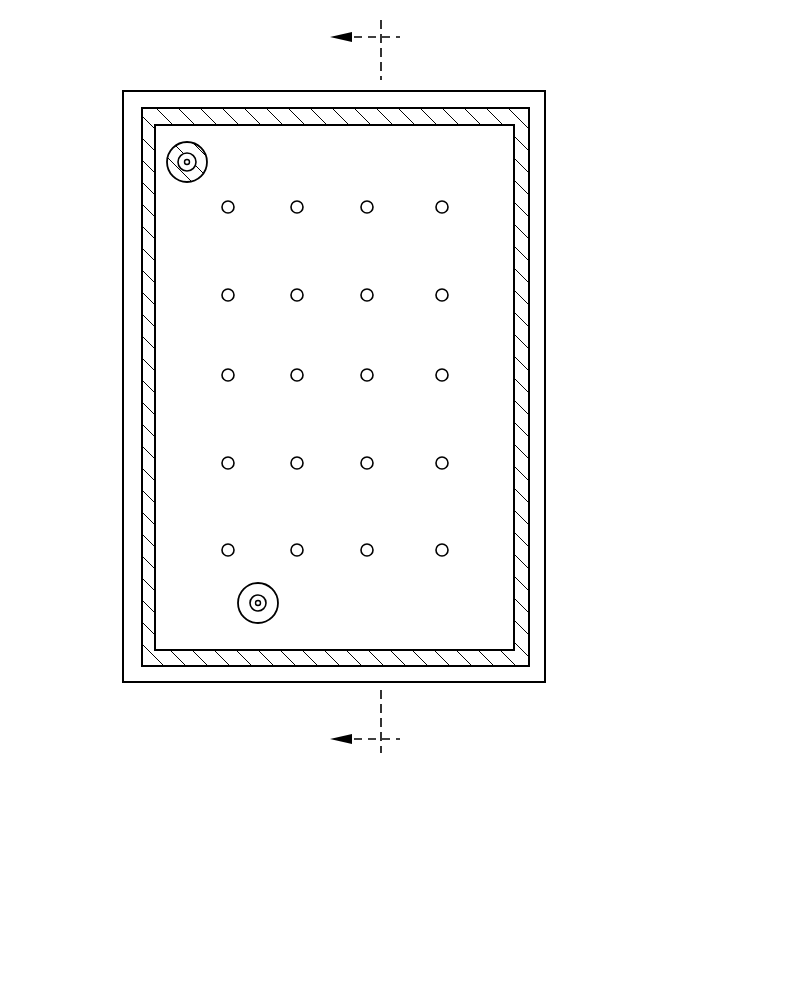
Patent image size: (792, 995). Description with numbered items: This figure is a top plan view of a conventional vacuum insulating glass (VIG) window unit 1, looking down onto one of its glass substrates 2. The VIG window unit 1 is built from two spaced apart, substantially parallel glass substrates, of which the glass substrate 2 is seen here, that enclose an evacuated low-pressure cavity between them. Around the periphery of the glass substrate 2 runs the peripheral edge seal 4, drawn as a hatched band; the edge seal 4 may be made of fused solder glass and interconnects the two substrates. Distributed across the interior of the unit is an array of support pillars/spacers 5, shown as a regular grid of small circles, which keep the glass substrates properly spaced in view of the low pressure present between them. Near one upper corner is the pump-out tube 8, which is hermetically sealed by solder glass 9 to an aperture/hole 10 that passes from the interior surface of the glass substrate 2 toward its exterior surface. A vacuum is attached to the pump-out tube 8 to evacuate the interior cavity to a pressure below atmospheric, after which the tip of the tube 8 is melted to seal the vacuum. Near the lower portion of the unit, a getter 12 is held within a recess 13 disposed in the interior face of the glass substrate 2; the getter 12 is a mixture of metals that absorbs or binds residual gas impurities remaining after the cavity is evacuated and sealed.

The VIG window unit 1 is at (110, 566).
The glass substrate 2 is at (331, 100).
The peripheral edge seal 4 is at (250, 117).
The support pillars/spacers 5 is at (448, 293).
The pump-out tube 8 is at (157, 202).
The solder glass 9 is at (186, 183).
The aperture/hole 10 is at (167, 170).
The getter 12 is at (257, 605).
The recess 13 is at (279, 603).